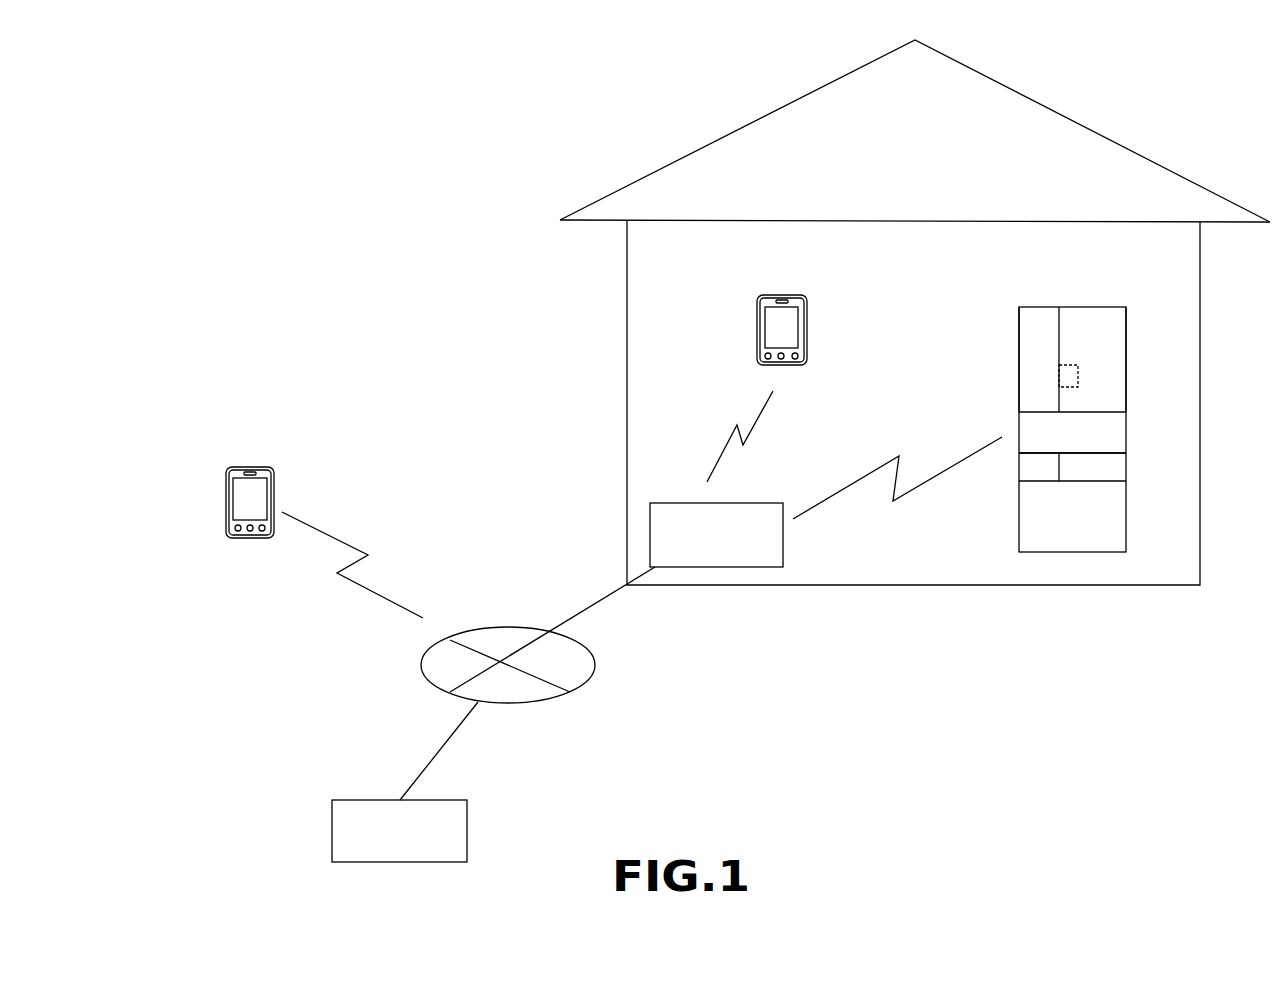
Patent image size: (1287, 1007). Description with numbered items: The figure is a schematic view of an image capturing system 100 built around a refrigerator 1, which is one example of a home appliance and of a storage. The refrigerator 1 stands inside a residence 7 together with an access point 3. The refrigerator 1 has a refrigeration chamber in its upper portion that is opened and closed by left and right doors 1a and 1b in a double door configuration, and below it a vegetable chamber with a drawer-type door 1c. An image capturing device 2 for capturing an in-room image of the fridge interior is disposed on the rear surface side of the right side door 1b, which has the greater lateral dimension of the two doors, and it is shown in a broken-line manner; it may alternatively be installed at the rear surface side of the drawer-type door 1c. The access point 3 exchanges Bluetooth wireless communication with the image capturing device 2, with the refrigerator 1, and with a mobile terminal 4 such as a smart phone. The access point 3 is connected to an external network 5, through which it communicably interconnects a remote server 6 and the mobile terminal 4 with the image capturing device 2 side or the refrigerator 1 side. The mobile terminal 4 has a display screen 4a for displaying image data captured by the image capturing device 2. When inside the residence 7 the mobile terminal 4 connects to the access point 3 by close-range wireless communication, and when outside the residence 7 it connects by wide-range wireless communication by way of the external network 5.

The refrigerator 1 is at (1037, 307).
The left door 1a is at (1027, 345).
The right door 1b is at (1117, 337).
The drawer-type door 1c is at (1110, 432).
The image capturing device 2 is at (1078, 379).
The access point 3 is at (757, 503).
The mobile terminal 4 is at (810, 325).
The display screen 4a is at (772, 330).
The external network 5 is at (512, 627).
The server 6 is at (360, 800).
The residence 7 is at (1137, 153).
The image capturing system 100 is at (455, 483).